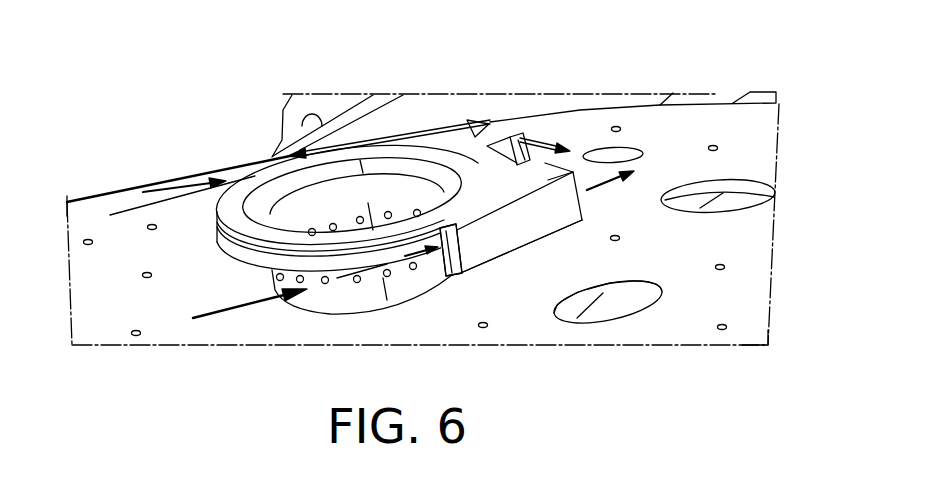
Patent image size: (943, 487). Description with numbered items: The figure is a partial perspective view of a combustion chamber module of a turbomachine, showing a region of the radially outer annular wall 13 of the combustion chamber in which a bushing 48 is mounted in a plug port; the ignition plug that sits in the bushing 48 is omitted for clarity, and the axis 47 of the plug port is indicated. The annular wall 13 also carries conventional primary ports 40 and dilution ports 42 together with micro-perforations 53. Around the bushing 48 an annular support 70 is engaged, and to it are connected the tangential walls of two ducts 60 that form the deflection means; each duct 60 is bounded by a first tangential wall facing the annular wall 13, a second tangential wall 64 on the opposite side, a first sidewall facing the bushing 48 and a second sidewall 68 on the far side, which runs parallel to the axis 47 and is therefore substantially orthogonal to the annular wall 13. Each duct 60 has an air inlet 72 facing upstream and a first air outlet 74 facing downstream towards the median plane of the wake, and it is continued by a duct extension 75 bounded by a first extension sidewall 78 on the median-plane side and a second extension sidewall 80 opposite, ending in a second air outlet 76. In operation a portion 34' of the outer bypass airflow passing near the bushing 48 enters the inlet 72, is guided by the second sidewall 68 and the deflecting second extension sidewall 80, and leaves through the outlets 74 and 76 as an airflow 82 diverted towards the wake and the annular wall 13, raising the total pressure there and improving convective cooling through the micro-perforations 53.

The radially outer annular wall 13 is at (423, 242).
The portion of the outer bypass airflow 34' is at (250, 338).
The primary ports 40 is at (607, 330).
The dilution ports 42 is at (735, 217).
The axis of the plug port 47 is at (342, 110).
The bushing 48 is at (362, 327).
The micro-perforations 53 is at (740, 364).
The ducts 60 is at (460, 306).
The second tangential wall 64 is at (508, 192).
The second sidewall 68 is at (488, 237).
The annular support 70 is at (267, 178).
The air inlet 72 is at (454, 293).
The first air outlet 74 is at (473, 97).
The duct extension 75 is at (403, 102).
The second air outlet 76 is at (537, 114).
The first extension sidewall 78 is at (534, 111).
The second extension sidewall 80 is at (569, 123).
The airflow 82 is at (640, 178).